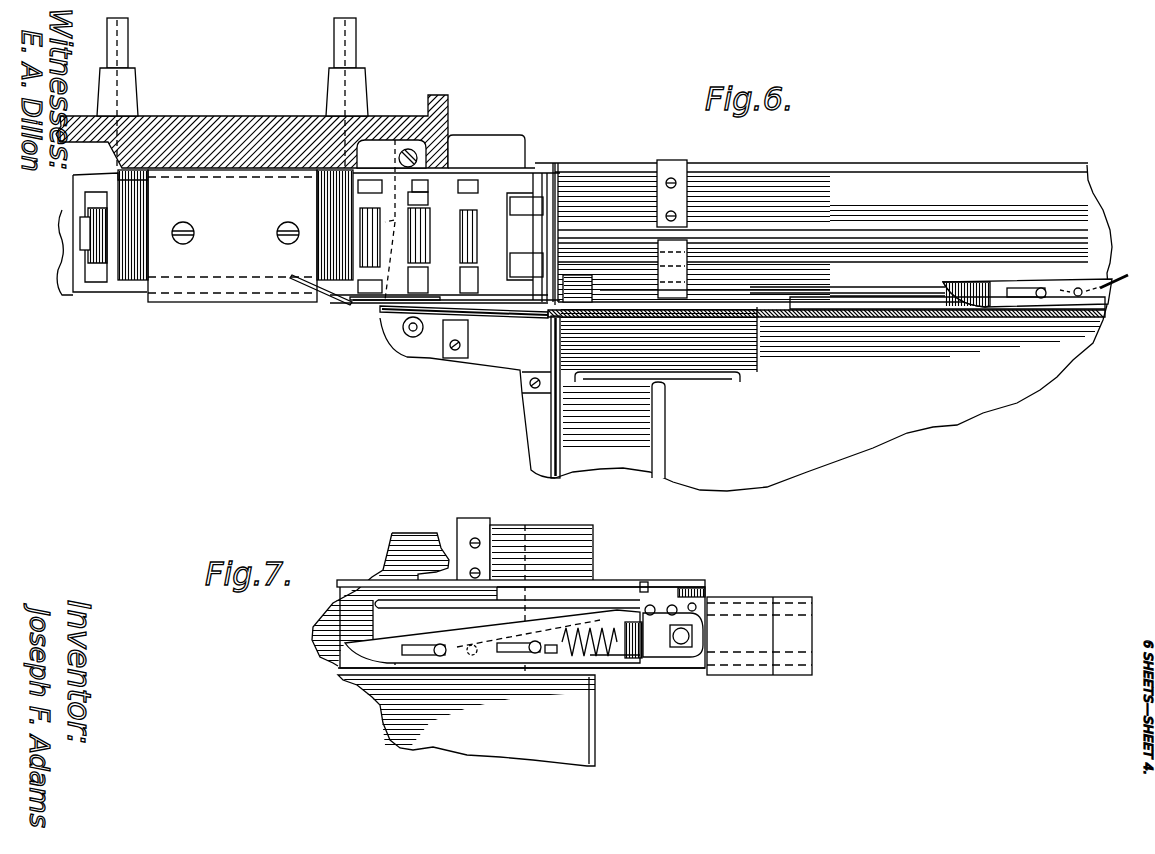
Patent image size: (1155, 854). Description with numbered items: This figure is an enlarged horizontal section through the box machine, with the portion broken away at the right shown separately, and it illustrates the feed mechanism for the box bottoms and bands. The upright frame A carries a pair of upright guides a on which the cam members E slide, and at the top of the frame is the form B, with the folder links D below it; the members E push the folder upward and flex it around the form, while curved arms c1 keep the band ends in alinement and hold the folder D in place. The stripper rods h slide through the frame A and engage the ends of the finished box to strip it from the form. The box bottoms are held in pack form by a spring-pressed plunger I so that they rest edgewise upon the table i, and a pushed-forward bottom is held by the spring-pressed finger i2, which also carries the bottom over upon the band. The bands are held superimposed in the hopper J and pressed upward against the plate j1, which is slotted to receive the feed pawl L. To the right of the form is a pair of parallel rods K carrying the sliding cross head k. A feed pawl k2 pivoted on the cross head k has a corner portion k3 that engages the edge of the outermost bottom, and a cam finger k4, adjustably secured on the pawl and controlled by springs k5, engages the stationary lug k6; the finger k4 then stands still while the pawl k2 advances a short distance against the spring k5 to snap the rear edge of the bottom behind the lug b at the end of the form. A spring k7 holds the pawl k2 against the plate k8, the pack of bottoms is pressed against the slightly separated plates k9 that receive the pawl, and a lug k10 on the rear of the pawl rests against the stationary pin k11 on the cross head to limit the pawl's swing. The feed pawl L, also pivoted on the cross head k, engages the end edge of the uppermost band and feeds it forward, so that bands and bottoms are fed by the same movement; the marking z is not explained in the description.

In FIG. 6, the upright frame A is at (262, 128).
In FIG. 6, the stripper rods h is at (128, 55).
In FIG. 6, the upright guides a is at (408, 150).
In FIG. 6, the folder links D is at (480, 178).
In FIG. 6, the form B is at (230, 265).
In FIG. 6, the cam members E is at (66, 255).
In FIG. 6, the lug b is at (323, 297).
In FIG. 6, the curved arms c1 is at (343, 303).
In FIG. 6, the spring-pressed finger i2 is at (362, 318).
In FIG. 6, the hopper J is at (898, 170).
In FIG. 7, the hopper J is at (557, 530).
In FIG. 6, the plate j1 is at (700, 190).
In FIG. 7, the plate j1 is at (445, 545).
In FIG. 6, the lug k6 is at (580, 275).
In FIG. 6, the plates k9 is at (730, 300).
In FIG. 6, the parallel rods K is at (835, 292).
In FIG. 7, the parallel rods K is at (733, 652).
In FIG. 6, the cam finger k4 is at (958, 282).
In FIG. 7, the cam finger k4 is at (417, 643).
In FIG. 6, the spring k7 is at (1118, 283).
In FIG. 7, the spring k7 is at (592, 640).
In FIG. 6, the plate k8 is at (902, 318).
In FIG. 7, the plate k8 is at (540, 675).
In FIG. 6, the corner portion k3 is at (998, 314).
In FIG. 7, the corner portion k3 is at (390, 672).
In FIG. 6, the table i is at (743, 398).
In FIG. 7, the table i is at (413, 745).
In FIG. 6, the spring-pressed plunger I is at (666, 448).
In FIG. 6, the pin z is at (733, 350).
In FIG. 7, the feed pawl L is at (597, 583).
In FIG. 7, the springs k5 is at (588, 632).
In FIG. 7, the cross head k is at (698, 660).
In FIG. 7, the feed pawl k2 is at (622, 652).
In FIG. 7, the stationary pin k11 is at (665, 612).
In FIG. 7, the lug k10 is at (698, 605).